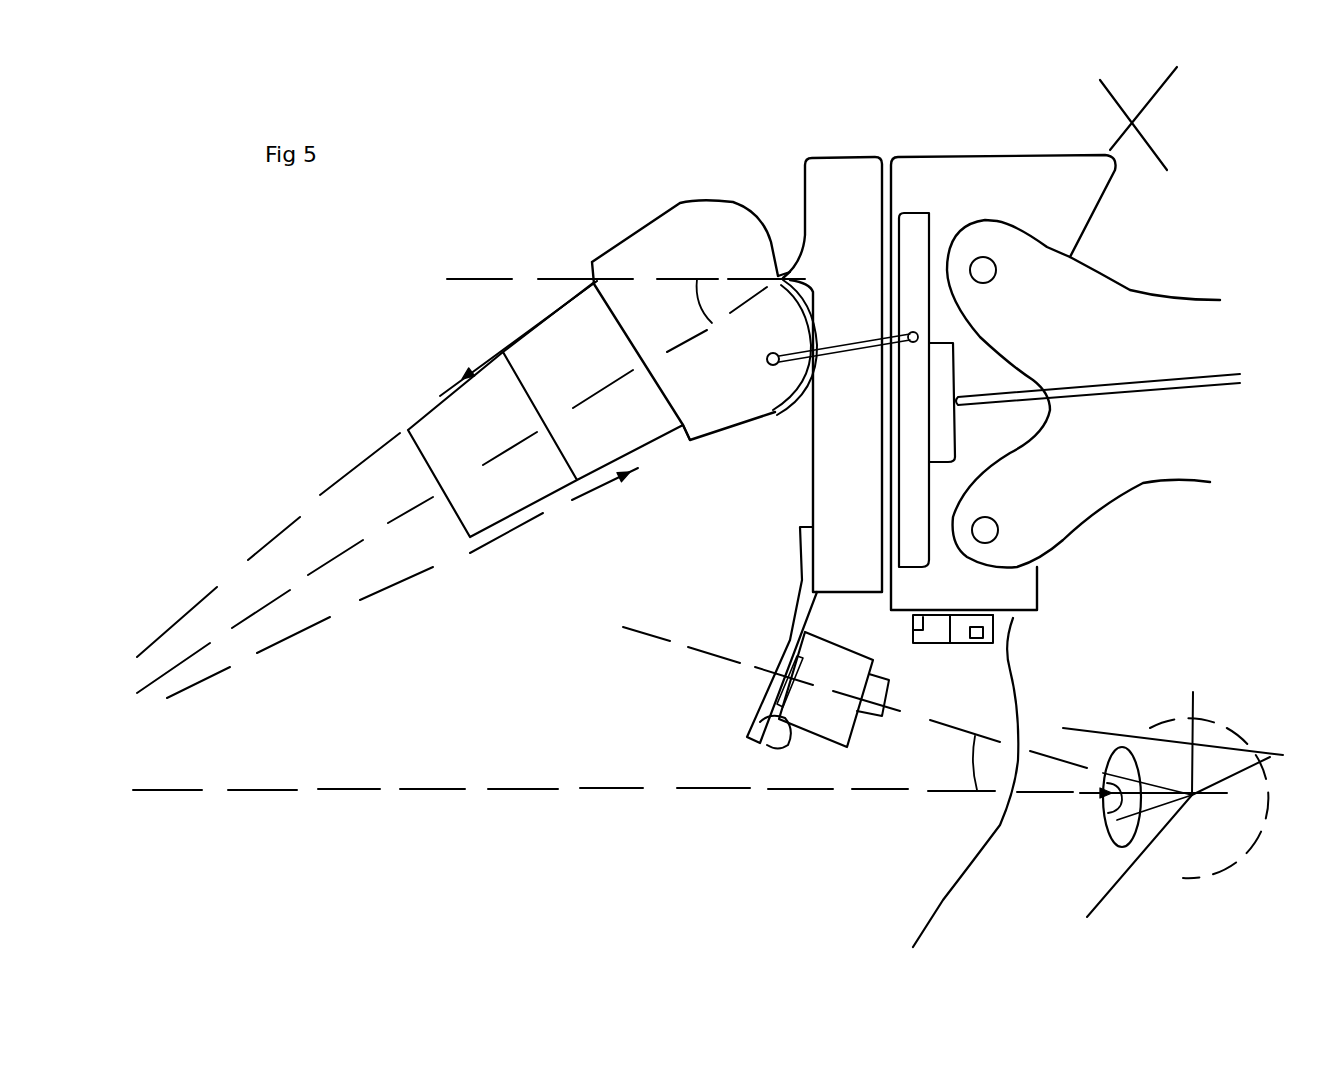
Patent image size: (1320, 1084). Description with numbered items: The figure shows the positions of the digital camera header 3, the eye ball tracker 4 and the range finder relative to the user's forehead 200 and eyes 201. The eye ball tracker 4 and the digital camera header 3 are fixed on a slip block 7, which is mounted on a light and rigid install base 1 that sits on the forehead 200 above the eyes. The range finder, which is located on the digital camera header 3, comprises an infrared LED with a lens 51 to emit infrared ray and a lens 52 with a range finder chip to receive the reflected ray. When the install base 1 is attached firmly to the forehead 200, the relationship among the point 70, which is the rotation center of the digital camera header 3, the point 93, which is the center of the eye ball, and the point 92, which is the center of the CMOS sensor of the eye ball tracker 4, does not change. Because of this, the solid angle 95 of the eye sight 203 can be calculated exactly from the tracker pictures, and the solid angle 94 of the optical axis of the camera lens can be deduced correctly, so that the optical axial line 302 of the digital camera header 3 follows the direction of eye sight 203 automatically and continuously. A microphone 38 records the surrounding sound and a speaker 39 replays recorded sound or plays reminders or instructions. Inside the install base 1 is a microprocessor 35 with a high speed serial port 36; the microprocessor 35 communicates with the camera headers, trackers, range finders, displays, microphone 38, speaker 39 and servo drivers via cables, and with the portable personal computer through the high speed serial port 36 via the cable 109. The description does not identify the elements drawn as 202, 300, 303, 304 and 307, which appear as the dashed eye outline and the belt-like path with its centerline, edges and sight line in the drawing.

The install base 1 is at (970, 190).
The digital camera header 3 is at (667, 243).
The eye ball tracker 4 is at (810, 748).
The slip block 7 is at (838, 190).
The microprocessor 35 is at (930, 493).
The high speed serial port 36 is at (940, 437).
The microphone 38 is at (935, 637).
The speaker 39 is at (987, 645).
The lens 51 is at (597, 281).
The lens 52 is at (683, 445).
The point 70 is at (781, 275).
The point 92 is at (795, 681).
The point 93 is at (1194, 729).
The solid angle 94 is at (695, 303).
The solid angle 95 is at (967, 763).
The cable 109 is at (1153, 380).
The forehead 200 is at (1173, 488).
The eyes 201 is at (1177, 857).
The cornea 202 is at (1120, 820).
The eye sight 203 is at (442, 790).
The belt 300 is at (487, 278).
The optical axial line 302 is at (347, 552).
The belt upper edge 303 is at (185, 622).
The belt lower edge 304 is at (300, 633).
The line of sight 307 is at (638, 635).